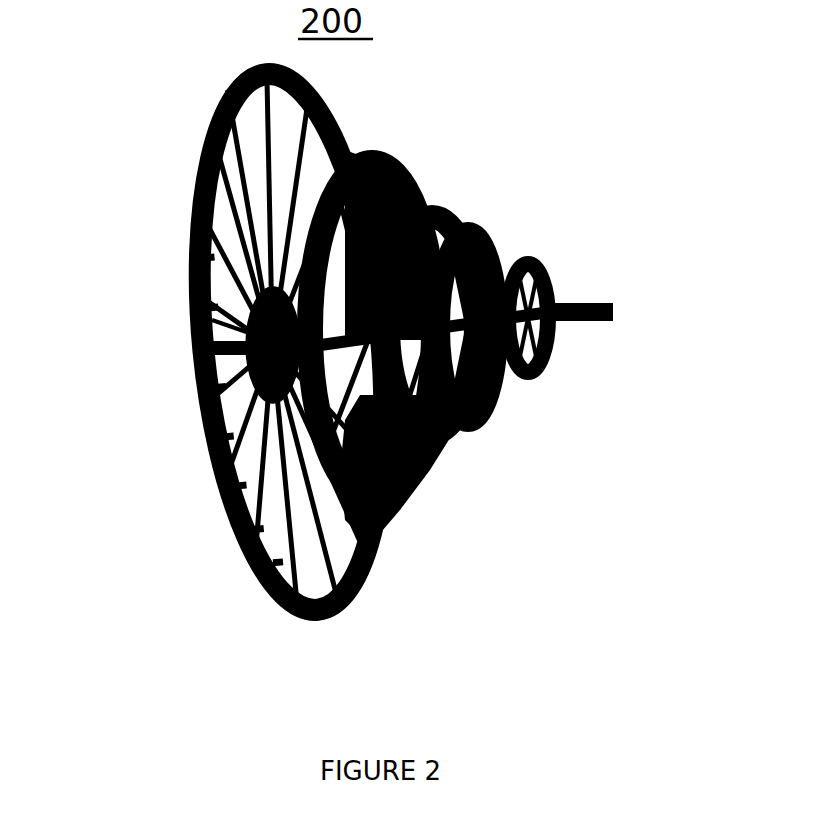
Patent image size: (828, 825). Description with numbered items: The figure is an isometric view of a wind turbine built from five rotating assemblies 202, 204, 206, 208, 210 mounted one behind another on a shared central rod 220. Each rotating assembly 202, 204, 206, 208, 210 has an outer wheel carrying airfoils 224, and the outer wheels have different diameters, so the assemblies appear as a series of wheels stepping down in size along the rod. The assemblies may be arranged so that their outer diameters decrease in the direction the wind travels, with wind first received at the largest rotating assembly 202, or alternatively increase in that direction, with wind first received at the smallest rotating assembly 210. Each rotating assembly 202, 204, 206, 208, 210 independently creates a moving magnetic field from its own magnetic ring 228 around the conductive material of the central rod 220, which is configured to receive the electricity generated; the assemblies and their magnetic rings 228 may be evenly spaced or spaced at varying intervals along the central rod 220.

The rotating assembly 202 is at (222, 118).
The rotating assembly 204 is at (372, 149).
The rotating assembly 206 is at (433, 204).
The rotating assembly 208 is at (470, 440).
The rotating assembly 210 is at (536, 393).
The central rod 220 is at (595, 303).
The airfoils 224 is at (200, 312).
The magnetic ring 228 is at (207, 373).